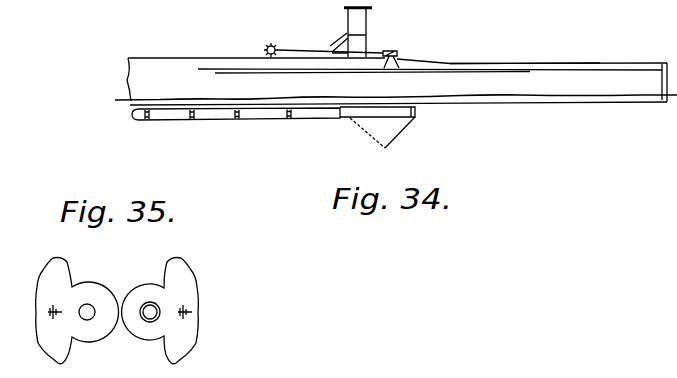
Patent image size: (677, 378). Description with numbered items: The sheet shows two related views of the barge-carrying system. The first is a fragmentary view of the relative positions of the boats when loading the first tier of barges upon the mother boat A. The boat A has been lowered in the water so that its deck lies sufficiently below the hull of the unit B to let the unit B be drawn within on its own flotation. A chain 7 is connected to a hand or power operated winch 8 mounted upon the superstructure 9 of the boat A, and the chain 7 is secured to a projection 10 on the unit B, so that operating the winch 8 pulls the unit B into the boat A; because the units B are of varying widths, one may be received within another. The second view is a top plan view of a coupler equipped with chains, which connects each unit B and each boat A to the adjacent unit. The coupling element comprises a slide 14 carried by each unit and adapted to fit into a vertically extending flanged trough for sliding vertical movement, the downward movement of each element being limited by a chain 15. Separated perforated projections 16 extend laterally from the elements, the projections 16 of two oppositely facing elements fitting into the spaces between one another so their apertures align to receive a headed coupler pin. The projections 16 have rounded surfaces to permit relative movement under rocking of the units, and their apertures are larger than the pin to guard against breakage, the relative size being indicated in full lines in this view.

In FIG. 34, the chain 7 is at (430, 60).
In FIG. 34, the winch 8 is at (277, 47).
In FIG. 34, the superstructure 9 is at (193, 57).
In FIG. 34, the projection 10 is at (520, 63).
In FIG. 34, the mother boat A is at (396, 81).
In FIG. 34, the unit B is at (579, 88).
In FIG. 35, the slide 14 is at (187, 263).
In FIG. 35, the chain 15 is at (197, 312).
In FIG. 35, the perforated projections 16 is at (141, 330).